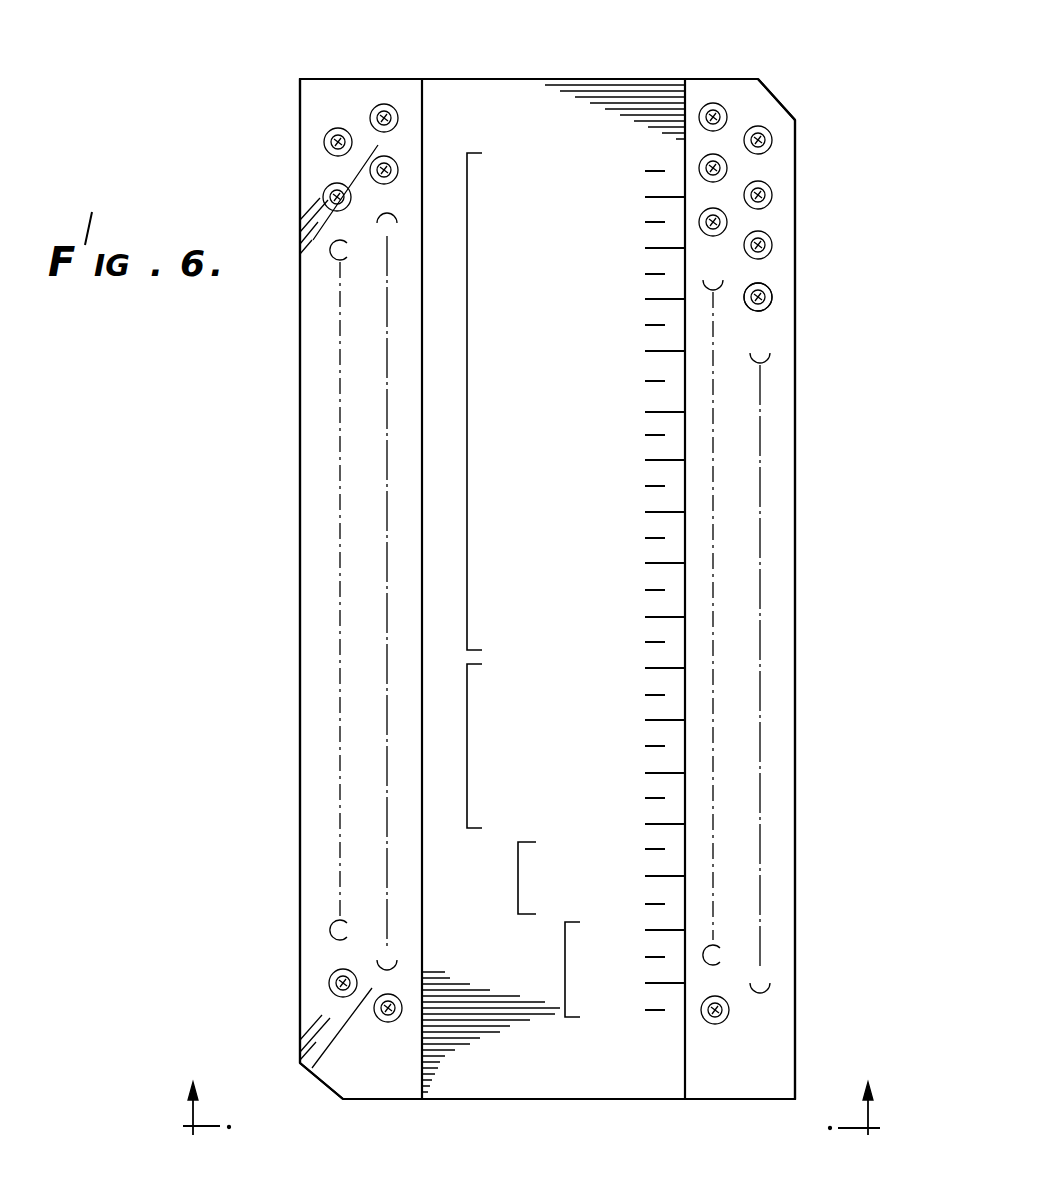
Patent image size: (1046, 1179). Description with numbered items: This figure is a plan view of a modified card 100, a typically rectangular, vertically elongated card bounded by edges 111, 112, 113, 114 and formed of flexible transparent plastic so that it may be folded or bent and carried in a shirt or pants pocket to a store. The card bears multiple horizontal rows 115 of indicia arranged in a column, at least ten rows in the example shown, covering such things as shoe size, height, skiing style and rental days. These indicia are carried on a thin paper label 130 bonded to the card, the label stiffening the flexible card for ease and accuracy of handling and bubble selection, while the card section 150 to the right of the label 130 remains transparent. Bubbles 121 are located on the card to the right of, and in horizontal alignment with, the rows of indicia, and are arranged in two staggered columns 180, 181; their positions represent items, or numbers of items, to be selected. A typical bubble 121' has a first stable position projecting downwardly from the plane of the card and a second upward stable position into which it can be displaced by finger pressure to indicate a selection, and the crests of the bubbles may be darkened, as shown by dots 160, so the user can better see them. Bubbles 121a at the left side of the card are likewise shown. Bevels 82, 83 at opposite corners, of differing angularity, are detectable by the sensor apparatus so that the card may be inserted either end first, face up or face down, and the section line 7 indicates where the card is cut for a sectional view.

The modified card 100 is at (288, 450).
The card edge 111 is at (300, 628).
The card edge 112 is at (805, 578).
The card edge 113 is at (517, 79).
The card edge 114 is at (582, 1100).
The horizontal rows of indicia 115 is at (490, 180).
The bubbles 121 is at (801, 589).
The left fasteners 121a is at (323, 196).
The typical bubble 121' is at (812, 307).
The thin label 130 is at (458, 1062).
The card section 150 is at (790, 385).
The darkened dots 160 is at (770, 298).
The column of bubbles 180 is at (703, 103).
The column of bubbles 181 is at (762, 125).
The bevel 82 is at (300, 1080).
The bevel 83 is at (785, 104).
The section line 7- 7 is at (532, 1105).